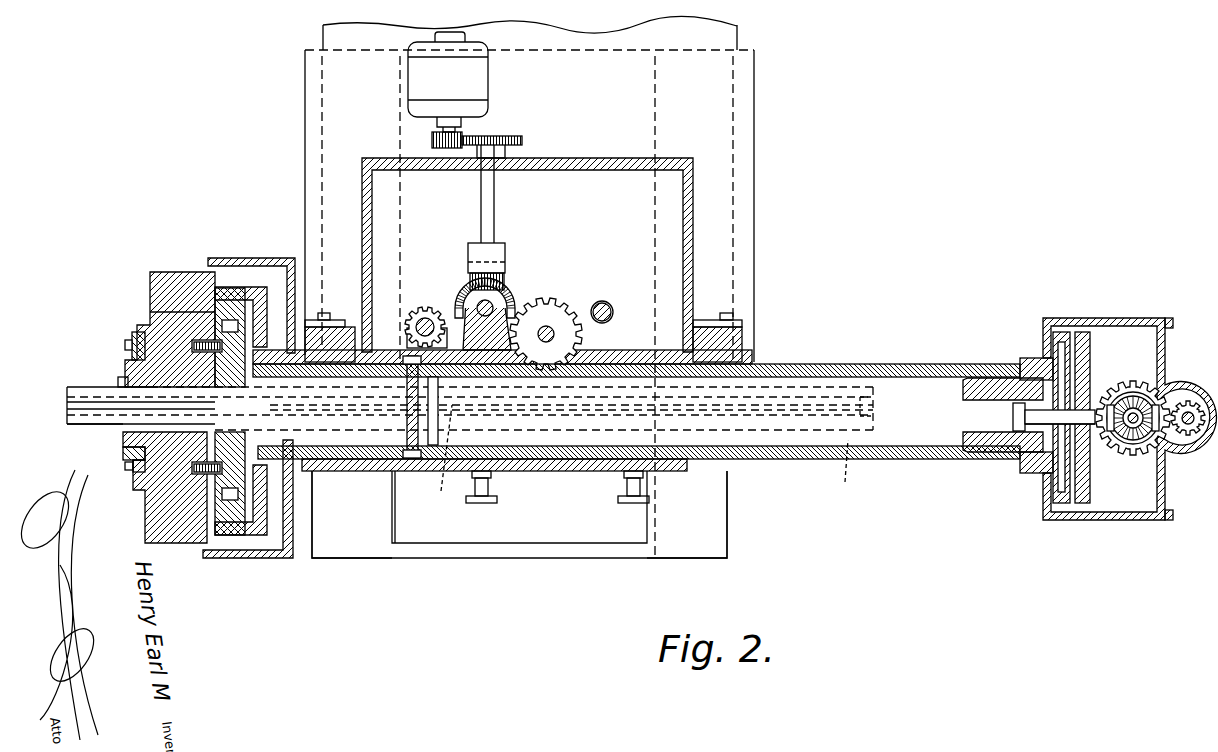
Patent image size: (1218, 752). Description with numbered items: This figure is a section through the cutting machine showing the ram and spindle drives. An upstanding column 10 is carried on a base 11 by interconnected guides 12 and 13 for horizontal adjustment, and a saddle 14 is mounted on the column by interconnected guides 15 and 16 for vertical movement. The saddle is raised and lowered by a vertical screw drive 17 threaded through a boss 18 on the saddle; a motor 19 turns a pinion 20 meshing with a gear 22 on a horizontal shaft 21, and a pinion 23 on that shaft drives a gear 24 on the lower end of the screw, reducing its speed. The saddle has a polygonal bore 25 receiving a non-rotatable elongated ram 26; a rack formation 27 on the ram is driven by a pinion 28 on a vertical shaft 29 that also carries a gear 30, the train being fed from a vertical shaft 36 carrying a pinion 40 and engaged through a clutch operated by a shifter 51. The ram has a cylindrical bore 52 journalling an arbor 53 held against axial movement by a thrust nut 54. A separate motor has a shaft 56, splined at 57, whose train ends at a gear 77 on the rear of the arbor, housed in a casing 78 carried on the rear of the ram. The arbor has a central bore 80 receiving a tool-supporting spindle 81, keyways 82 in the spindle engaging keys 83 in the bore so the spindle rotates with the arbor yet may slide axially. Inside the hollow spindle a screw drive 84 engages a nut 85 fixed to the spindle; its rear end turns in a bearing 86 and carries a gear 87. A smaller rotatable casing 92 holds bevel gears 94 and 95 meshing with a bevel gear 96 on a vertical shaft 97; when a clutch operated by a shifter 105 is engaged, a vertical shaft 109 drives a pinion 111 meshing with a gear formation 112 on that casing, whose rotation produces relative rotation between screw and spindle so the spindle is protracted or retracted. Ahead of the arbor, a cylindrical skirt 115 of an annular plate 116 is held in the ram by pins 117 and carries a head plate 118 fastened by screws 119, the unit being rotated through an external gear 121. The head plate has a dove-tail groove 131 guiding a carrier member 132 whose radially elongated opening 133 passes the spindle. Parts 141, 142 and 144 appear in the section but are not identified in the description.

The column 10 is at (690, 230).
The base 11 is at (510, 559).
The guide 12 is at (754, 180).
The guide 13 is at (685, 559).
The saddle 14 is at (548, 460).
The guide 15 is at (712, 322).
The guide 16 is at (742, 341).
The screw drive 17 is at (473, 285).
The boss 18 is at (512, 290).
The motor 19 is at (448, 82).
The pinion 20 is at (433, 141).
The horizontal shaft 21 is at (495, 208).
The gear 22 is at (500, 137).
The pinion 23 is at (503, 262).
The gear 24 is at (517, 300).
The bore 25 is at (522, 471).
The ram 26 is at (598, 471).
The rack formation 27 is at (818, 365).
The pinion 28 is at (551, 330).
The vertical shaft 29 is at (573, 298).
The gear 30 is at (583, 336).
The vertical shaft 36 is at (410, 330).
The pinion 40 is at (420, 308).
The shifter 51 is at (468, 490).
The cylindrical bore 52 is at (940, 378).
The arbor 53 is at (858, 400).
The thrust nut 54 is at (1030, 473).
The shaft 56 is at (612, 308).
The spline 57 is at (599, 310).
The gear 77 is at (1061, 505).
The casing 78 is at (1110, 520).
The cylindrical bore 80 is at (960, 452).
The spindle 81 is at (80, 386).
The keyways 82 is at (95, 425).
The keys 83 is at (441, 454).
The screw drive 84 is at (990, 400).
The nut 85 is at (844, 467).
The bearing 86 is at (988, 452).
The gear 87 is at (1086, 470).
The casing 92 is at (1125, 375).
The gear 94 is at (1170, 381).
The gear 95 is at (1118, 393).
The gear 96 is at (1140, 388).
The vertical shaft 97 is at (1133, 440).
The shifter 105 is at (640, 500).
The vertical shaft 109 is at (1185, 432).
The pinion 111 is at (1192, 430).
The gear formation 112 is at (1170, 395).
The skirt portion 115 is at (345, 466).
The annular plate 116 is at (293, 530).
The pins 117 is at (410, 460).
The head plate 118 is at (175, 545).
The screws 119 is at (262, 470).
The external gear 121 is at (250, 525).
The dove-tail groove 131 is at (128, 452).
The carrier member 132 is at (125, 441).
The opening 133 is at (112, 383).
The upper chuck body 141 is at (152, 310).
The rack 142 is at (230, 540).
The cover 144 is at (270, 258).